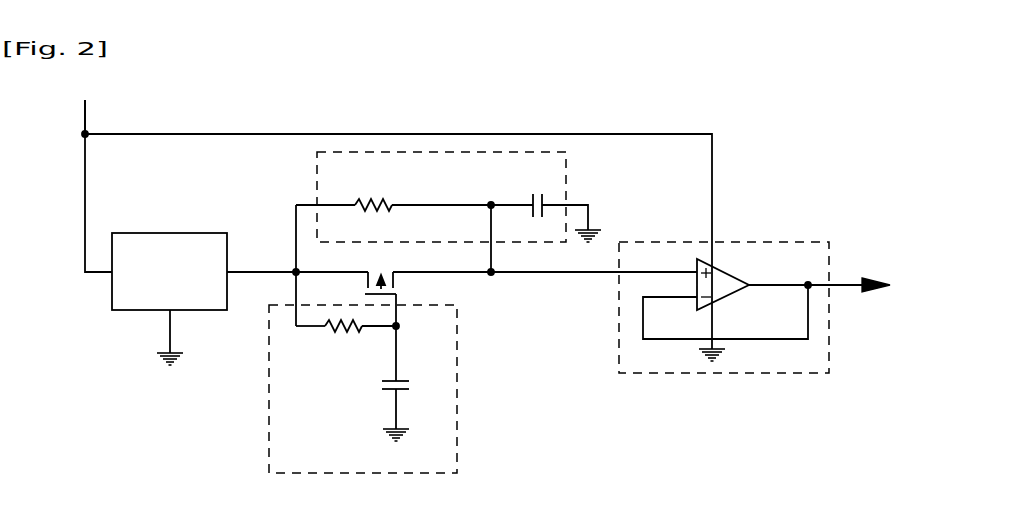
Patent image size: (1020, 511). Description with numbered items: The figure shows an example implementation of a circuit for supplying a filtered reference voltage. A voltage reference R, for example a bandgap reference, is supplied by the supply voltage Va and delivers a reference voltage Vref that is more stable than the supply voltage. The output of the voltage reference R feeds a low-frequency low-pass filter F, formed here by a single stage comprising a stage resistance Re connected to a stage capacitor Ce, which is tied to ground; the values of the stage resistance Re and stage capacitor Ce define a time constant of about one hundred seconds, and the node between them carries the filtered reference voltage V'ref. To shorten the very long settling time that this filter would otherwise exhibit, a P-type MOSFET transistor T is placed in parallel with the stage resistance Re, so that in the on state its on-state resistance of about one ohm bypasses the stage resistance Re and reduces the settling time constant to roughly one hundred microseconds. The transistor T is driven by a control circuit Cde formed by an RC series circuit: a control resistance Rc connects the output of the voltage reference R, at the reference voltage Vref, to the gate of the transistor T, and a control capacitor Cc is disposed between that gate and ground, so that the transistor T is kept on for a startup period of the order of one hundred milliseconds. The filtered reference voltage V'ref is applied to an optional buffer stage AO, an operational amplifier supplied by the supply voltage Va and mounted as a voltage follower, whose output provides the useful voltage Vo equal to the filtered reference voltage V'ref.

The supply voltage Va is at (85, 103).
The reference voltage Vref is at (265, 272).
The voltage reference R is at (169, 299).
The low-pass filter F is at (448, 156).
The stage resistance Re is at (393, 188).
The stage capacitor Ce is at (539, 204).
The transistor T is at (410, 284).
The control resistance Rc is at (347, 341).
The control capacitor Cc is at (382, 383).
The control circuit Cde is at (413, 391).
The filtered reference voltage V'ref is at (594, 313).
The buffer stage AO is at (817, 242).
The useful voltage Vo is at (893, 291).